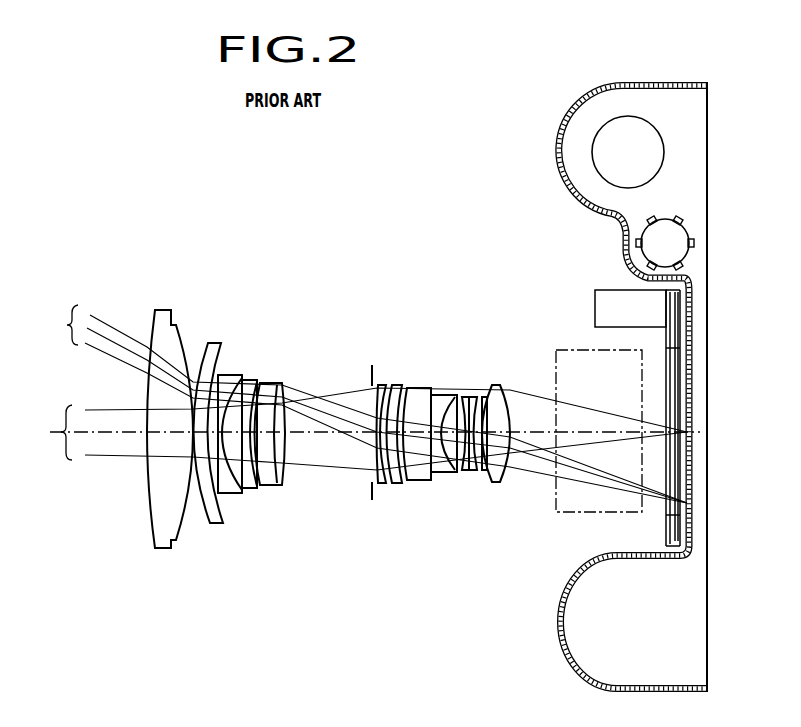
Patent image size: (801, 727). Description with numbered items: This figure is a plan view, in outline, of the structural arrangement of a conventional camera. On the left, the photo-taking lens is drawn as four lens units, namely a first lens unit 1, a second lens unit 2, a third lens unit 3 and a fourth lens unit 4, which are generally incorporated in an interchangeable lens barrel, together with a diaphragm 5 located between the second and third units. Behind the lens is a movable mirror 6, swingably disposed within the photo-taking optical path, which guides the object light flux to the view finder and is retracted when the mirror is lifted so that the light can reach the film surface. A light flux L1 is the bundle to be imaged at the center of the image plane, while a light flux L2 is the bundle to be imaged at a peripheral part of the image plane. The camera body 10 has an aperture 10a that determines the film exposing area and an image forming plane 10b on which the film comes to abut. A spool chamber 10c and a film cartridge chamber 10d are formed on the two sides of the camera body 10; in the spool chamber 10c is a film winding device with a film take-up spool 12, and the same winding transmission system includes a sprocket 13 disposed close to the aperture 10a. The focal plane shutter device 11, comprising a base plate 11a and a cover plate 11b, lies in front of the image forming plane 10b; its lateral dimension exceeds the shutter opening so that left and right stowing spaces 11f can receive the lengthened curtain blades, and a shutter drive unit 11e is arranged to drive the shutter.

The first lens unit 1 is at (143, 572).
The second lens unit 2 is at (280, 572).
The third lens unit 3 is at (372, 572).
The fourth lens unit 4 is at (465, 572).
The diaphragm 5 is at (372, 490).
The movable mirror 6 is at (556, 490).
The camera body 10 is at (700, 288).
The aperture 10a is at (692, 355).
The image forming plane 10b is at (692, 412).
The spool chamber 10c is at (688, 100).
The film cartridge chamber 10d is at (670, 677).
The focal plane shutter device 11 is at (690, 533).
The base plate 11a is at (673, 555).
The cover plate 11b is at (680, 522).
The shutter drive unit 11e is at (602, 308).
The stowing spaces 11f is at (673, 323).
The film take-up spool 12 is at (625, 130).
The sprocket 13 is at (690, 236).
The light flux imaged at center of image plane L1 is at (54, 432).
The light flux imaged at peripheral part of image plane L2 is at (60, 325).